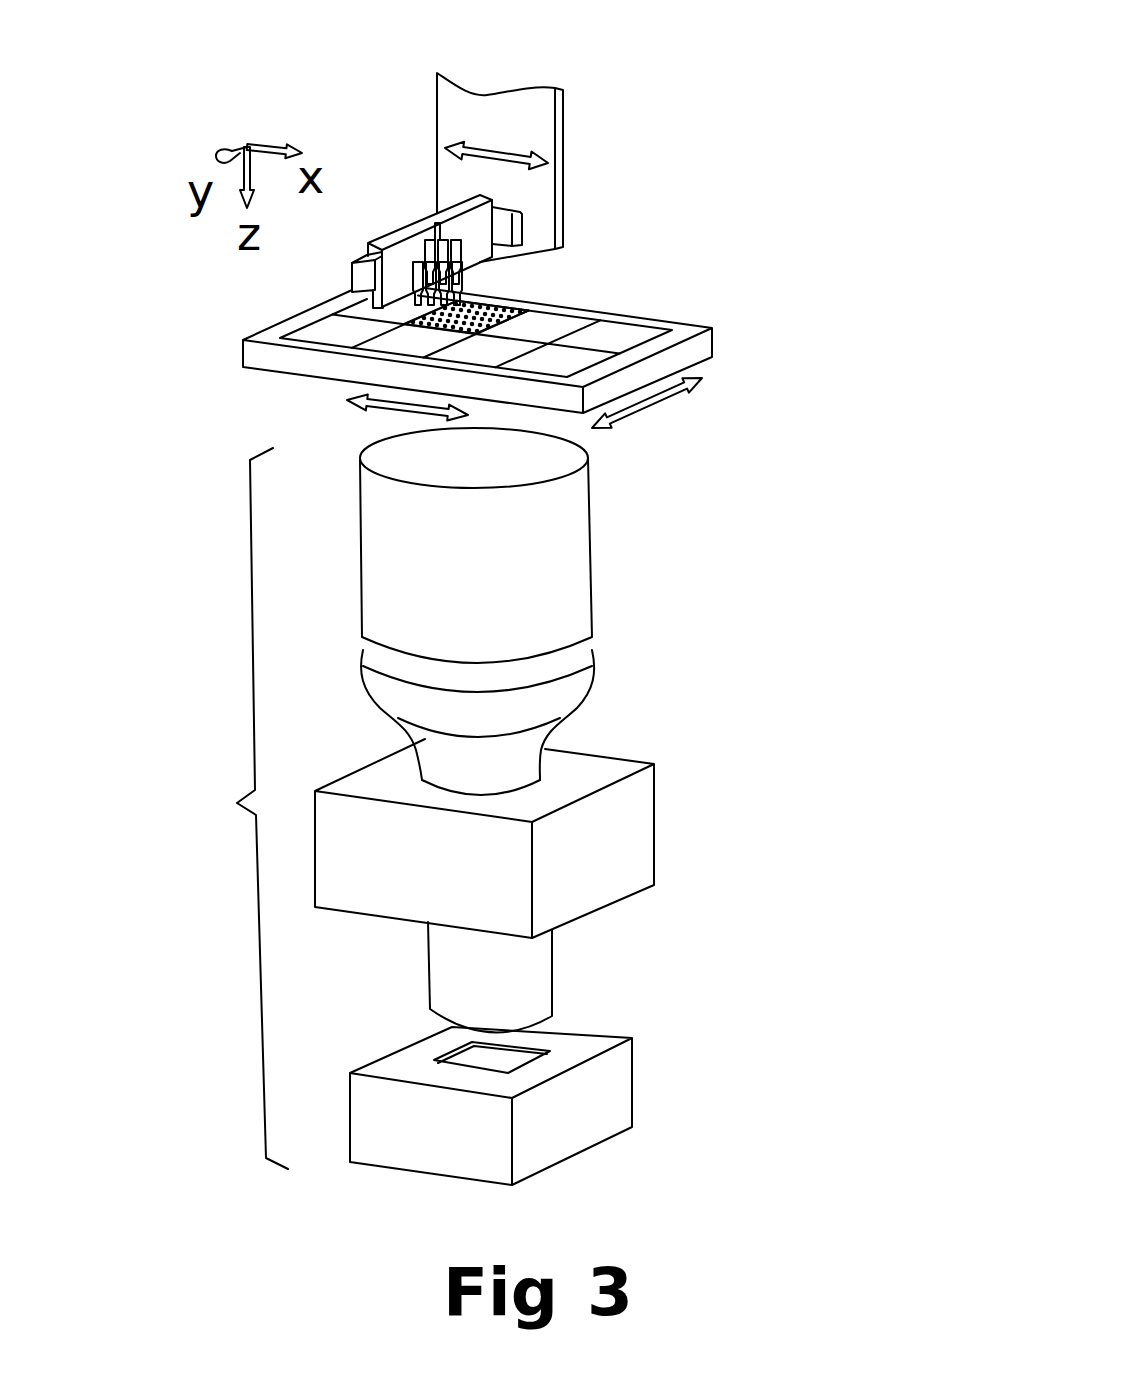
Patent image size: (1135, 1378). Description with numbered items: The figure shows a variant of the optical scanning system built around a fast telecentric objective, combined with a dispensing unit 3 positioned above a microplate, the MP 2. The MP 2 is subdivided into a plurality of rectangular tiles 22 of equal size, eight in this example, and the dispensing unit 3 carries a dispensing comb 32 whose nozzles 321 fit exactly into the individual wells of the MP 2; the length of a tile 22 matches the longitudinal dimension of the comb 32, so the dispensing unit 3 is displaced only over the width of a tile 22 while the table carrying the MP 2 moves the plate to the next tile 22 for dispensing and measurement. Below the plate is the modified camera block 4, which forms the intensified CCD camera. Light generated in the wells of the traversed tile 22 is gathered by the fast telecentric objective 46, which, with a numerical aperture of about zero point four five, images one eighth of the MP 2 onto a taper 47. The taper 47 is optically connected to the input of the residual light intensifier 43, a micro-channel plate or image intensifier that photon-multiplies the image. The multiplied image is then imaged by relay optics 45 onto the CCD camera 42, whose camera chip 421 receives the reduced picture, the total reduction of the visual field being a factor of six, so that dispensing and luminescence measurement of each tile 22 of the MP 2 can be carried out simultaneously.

The microplate (MP) 2 is at (660, 358).
The tile 22 is at (638, 332).
The nozzles of the comb 321 is at (468, 282).
The dispensing unit 3 is at (558, 115).
The dispensing comb 32 is at (402, 238).
The camera block 4 is at (238, 808).
The fast telecentric objective 46 is at (575, 572).
The taper 47 is at (567, 707).
The residual light intensifier 43 is at (632, 809).
The relay optics 45 is at (535, 971).
The CCD camera 42 is at (621, 1095).
The camera chip 421 is at (550, 1052).